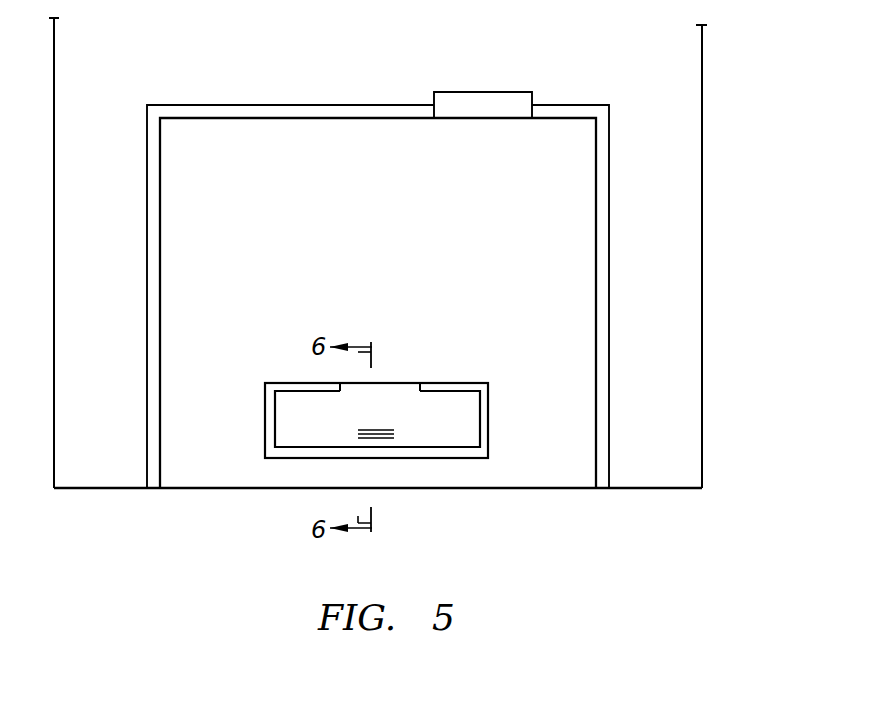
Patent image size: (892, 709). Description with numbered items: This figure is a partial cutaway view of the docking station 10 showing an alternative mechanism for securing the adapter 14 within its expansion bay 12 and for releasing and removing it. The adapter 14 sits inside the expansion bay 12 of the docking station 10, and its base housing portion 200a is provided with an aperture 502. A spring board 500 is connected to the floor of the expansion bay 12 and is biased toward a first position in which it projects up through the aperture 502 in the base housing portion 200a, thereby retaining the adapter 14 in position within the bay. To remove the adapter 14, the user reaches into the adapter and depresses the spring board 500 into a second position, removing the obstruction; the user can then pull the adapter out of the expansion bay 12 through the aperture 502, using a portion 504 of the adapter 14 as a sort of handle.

The docking station 10 is at (703, 349).
The expansion bay 12 is at (603, 489).
The adapter 14 is at (542, 479).
The base housing portion 200a is at (516, 297).
The spring board 500 is at (406, 455).
The aperture 502 is at (483, 415).
The portion of the adapter 504 is at (282, 472).